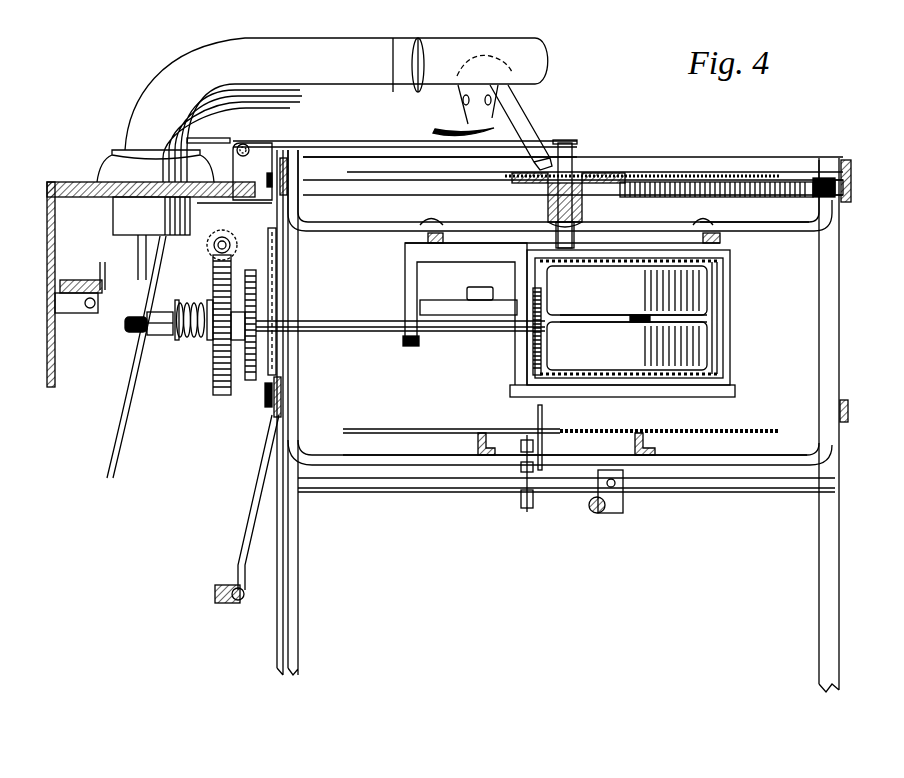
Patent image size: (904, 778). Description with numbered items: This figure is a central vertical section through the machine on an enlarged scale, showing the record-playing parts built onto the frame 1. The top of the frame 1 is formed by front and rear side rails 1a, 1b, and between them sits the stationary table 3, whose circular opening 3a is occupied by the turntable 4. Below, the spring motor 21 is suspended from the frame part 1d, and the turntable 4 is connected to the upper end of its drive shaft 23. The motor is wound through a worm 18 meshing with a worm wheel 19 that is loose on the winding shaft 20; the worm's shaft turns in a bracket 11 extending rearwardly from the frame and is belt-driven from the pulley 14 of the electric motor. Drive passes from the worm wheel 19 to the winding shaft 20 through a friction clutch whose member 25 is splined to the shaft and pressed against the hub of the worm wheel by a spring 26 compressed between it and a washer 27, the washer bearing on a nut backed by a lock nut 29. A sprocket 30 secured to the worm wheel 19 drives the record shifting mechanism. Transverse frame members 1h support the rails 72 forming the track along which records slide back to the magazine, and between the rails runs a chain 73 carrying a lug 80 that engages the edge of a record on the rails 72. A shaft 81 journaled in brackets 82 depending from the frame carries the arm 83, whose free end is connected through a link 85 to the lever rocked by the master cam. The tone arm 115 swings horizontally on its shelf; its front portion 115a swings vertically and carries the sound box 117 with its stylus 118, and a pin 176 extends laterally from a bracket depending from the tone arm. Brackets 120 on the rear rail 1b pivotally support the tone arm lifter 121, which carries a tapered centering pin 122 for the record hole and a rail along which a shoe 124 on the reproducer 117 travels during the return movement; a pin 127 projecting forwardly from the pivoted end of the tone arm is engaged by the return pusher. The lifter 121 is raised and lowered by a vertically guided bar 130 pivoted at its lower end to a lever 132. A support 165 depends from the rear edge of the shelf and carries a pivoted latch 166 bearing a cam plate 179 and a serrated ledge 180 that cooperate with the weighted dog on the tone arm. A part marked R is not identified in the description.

The frame 1 is at (847, 313).
The front side rail 1a is at (852, 166).
The rear side rail 1b is at (298, 144).
The frame part 1d is at (788, 232).
The transverse members 1h is at (728, 455).
The stationary table 3 is at (839, 178).
The circular opening 3a is at (826, 178).
The turntable 4 is at (758, 182).
The bracket 11 is at (256, 232).
The pulley 14 is at (136, 363).
The worm 18 is at (220, 232).
The worm wheel 19 is at (212, 389).
The winding shaft 20 is at (355, 322).
The spring motor 21 is at (740, 326).
The drive shaft 23 is at (584, 218).
The clutch member 25 is at (209, 348).
The spring 26 is at (205, 302).
The washer 27 is at (179, 300).
The lock nut 29 is at (142, 335).
The sprocket 30 is at (251, 382).
The rails 72 is at (476, 444).
The chain 73 is at (536, 506).
The lug 80 is at (544, 412).
The shaft 81 is at (718, 494).
The brackets 82 is at (286, 496).
The arm 83 is at (612, 500).
The link 85 is at (598, 514).
The tone arm 115 is at (160, 72).
The front portion of tone arm 115a is at (503, 54).
The sound reproducer 117 is at (525, 112).
The stylus 118 is at (556, 142).
The brackets 120 is at (234, 173).
The tone arm lifter 121 is at (356, 140).
The centering pin 122 is at (578, 152).
The shoe 124 is at (450, 130).
The pin 127 is at (226, 137).
The bar 130 is at (255, 502).
The lever 132 is at (220, 584).
The support 165 is at (55, 240).
The latch 166 is at (76, 313).
The pin 176 is at (151, 216).
The cam plate 179 is at (100, 268).
The ledge 180 is at (60, 284).
The rail R is at (452, 428).